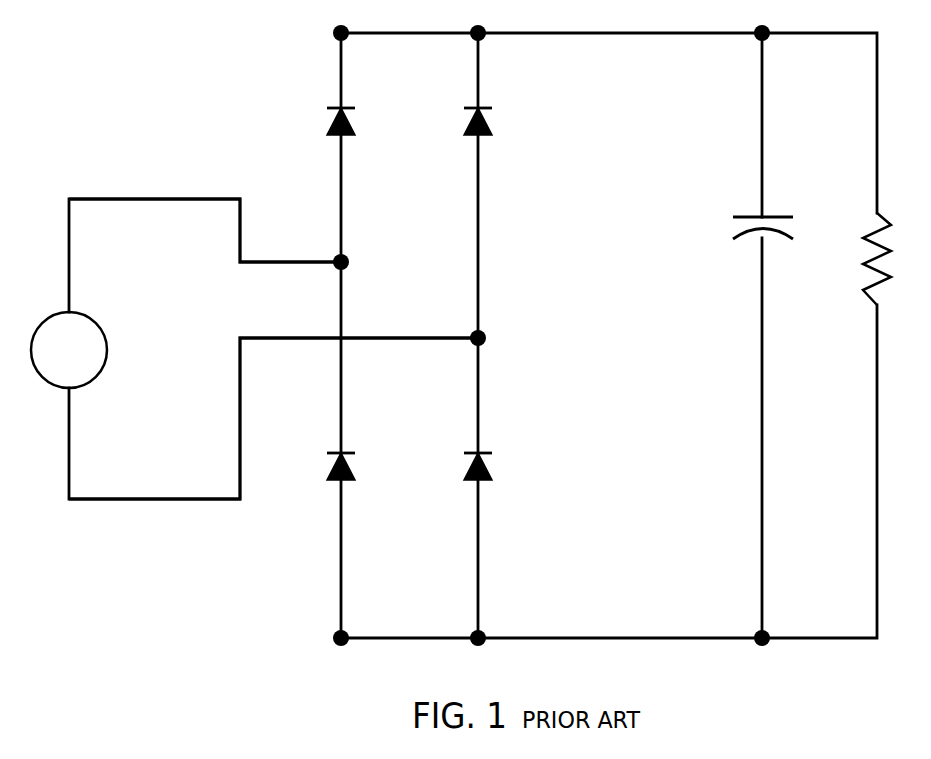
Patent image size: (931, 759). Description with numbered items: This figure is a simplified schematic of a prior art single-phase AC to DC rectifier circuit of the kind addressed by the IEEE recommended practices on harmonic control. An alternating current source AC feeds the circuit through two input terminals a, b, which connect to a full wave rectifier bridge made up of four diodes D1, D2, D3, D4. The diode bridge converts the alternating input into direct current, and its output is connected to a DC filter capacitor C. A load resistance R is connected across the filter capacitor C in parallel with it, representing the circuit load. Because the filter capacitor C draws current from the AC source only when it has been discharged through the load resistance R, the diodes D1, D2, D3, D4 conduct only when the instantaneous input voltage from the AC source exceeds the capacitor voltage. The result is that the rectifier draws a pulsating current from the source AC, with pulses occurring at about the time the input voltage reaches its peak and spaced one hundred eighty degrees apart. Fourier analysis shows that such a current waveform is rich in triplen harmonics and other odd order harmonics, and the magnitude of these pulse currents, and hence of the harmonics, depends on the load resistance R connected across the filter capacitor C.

The AC source AC is at (69, 350).
The first input terminal a is at (205, 230).
The second input terminal b is at (273, 418).
The diode D1 is at (360, 122).
The diode D2 is at (497, 467).
The diode D3 is at (497, 122).
The diode D4 is at (360, 467).
The DC filter capacitor C is at (763, 244).
The load resistance R is at (864, 259).